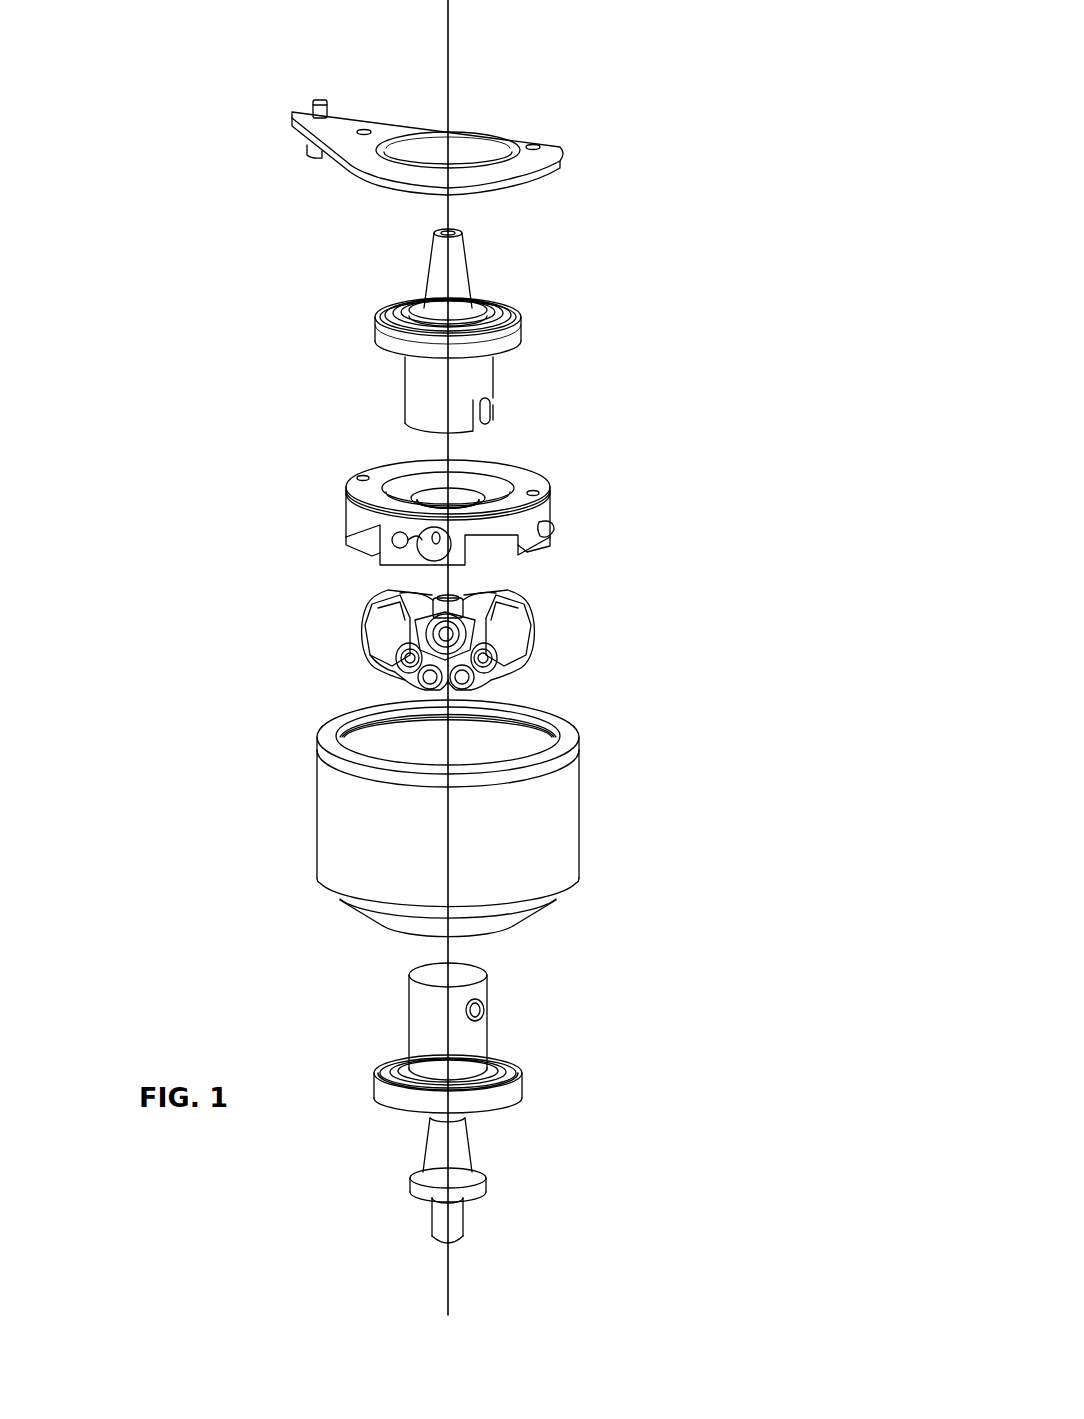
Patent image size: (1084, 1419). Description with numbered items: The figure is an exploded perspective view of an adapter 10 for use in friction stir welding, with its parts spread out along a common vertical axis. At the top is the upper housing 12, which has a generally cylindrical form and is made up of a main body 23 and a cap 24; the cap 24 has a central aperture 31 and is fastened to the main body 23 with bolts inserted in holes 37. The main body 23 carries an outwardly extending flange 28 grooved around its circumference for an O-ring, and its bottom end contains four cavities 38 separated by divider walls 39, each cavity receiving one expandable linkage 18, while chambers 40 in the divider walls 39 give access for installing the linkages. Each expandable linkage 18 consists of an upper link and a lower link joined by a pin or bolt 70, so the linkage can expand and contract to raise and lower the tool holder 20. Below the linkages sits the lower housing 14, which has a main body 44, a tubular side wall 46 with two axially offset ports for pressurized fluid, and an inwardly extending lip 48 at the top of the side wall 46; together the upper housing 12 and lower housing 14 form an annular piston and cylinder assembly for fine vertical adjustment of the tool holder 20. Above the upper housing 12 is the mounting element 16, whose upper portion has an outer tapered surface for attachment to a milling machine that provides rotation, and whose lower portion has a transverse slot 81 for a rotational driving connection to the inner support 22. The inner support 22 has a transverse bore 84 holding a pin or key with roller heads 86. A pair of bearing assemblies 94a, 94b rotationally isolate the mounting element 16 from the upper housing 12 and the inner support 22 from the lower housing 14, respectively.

The adapter 10 is at (668, 400).
The upper housing 12 is at (374, 513).
The lower housing 14 is at (528, 818).
The mounting element 16 is at (486, 316).
The expandable linkage 18 is at (482, 647).
The tool holder 20 is at (520, 1185).
The inner support 22 is at (512, 1041).
The main body 23 is at (513, 472).
The cap 24 is at (435, 122).
The outwardly extending flange 28 is at (553, 496).
The aperture 31 is at (422, 153).
The holes 37 is at (362, 128).
The cavities 38 is at (388, 545).
The divider walls 39 is at (383, 553).
The chambers 40 is at (430, 552).
The main body 44 is at (560, 905).
The tubular side wall 46 is at (545, 810).
The inwardly extending lip 48 is at (567, 738).
The pin or bolt 70 is at (378, 677).
The transverse slot 81 is at (490, 412).
The transverse bore 84 is at (467, 1003).
The roller heads 86 is at (485, 1010).
The bearing assembly 94a is at (512, 337).
The bearing assembly 94b is at (503, 1095).